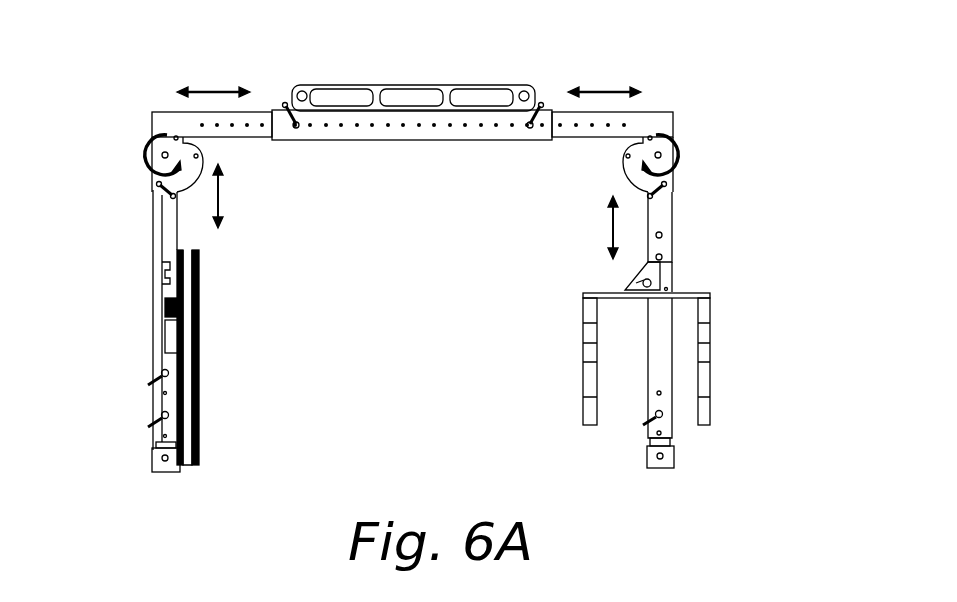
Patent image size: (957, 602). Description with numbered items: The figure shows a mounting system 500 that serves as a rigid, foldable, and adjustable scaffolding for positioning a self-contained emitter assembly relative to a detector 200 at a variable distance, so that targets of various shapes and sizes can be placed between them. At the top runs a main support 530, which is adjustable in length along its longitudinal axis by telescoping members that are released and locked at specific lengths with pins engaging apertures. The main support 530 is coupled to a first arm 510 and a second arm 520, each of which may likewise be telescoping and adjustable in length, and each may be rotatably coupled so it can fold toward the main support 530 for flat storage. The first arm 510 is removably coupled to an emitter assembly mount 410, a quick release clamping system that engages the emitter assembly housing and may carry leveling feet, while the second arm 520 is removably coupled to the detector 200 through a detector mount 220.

The mounting system 500 is at (633, 61).
The main support 530 is at (415, 143).
The second arm 520 is at (152, 232).
The first arm 510 is at (668, 278).
The emitter assembly mount 410 is at (585, 352).
The detector mount 220 is at (155, 433).
The detector 200 is at (188, 462).